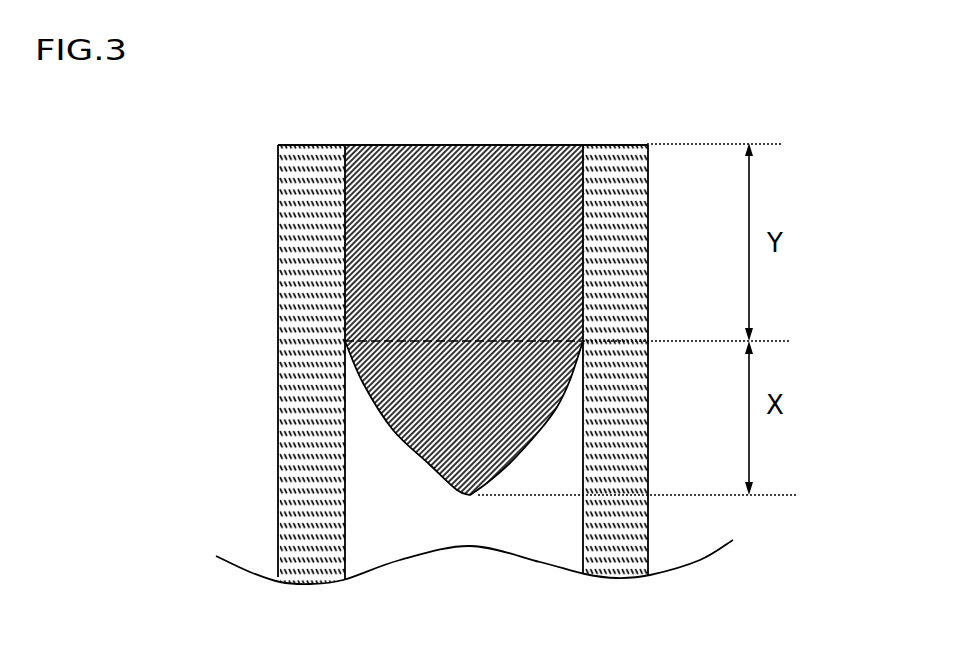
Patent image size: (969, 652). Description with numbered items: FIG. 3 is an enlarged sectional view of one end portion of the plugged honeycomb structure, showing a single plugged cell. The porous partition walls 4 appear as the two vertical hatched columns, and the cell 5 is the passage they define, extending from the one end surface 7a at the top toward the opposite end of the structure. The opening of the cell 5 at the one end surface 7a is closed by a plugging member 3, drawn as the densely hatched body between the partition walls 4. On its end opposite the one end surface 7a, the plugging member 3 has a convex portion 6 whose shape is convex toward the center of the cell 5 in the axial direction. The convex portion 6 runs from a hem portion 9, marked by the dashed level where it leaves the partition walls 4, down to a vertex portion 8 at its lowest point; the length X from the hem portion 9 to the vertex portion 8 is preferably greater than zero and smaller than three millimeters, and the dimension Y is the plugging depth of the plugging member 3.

The plugging member 3 is at (490, 290).
The partition wall 4 is at (312, 427).
The cell 5 is at (395, 527).
The convex portion 6 is at (477, 407).
The one end surface 7a is at (286, 121).
The vertex portion 8 is at (470, 504).
The hem portion 9 is at (512, 343).